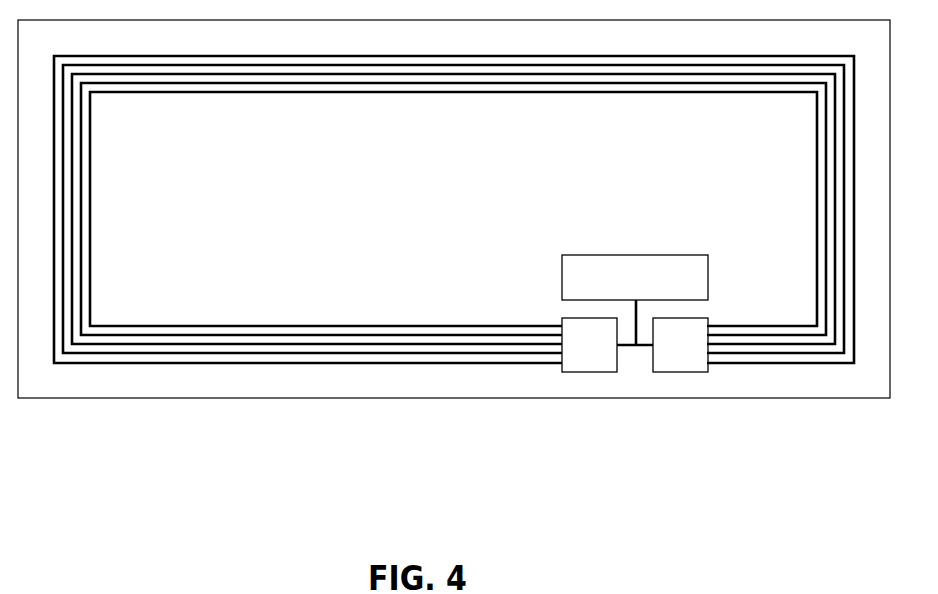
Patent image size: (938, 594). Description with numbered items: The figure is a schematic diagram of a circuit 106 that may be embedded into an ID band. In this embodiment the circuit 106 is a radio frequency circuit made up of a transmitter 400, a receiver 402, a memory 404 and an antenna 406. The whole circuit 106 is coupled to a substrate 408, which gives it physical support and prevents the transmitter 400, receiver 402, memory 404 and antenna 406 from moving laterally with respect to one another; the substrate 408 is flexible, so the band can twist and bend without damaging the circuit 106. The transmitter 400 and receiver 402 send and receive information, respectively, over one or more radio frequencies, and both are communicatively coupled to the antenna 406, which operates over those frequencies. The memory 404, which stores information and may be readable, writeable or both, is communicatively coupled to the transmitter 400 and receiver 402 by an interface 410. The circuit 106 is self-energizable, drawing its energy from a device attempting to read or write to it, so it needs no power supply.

The circuit 106 is at (454, 258).
The transmitter 400 is at (580, 372).
The receiver 402 is at (688, 372).
The memory 404 is at (635, 255).
The antenna 406 is at (400, 364).
The substrate 408 is at (273, 218).
The interface 410 is at (638, 346).